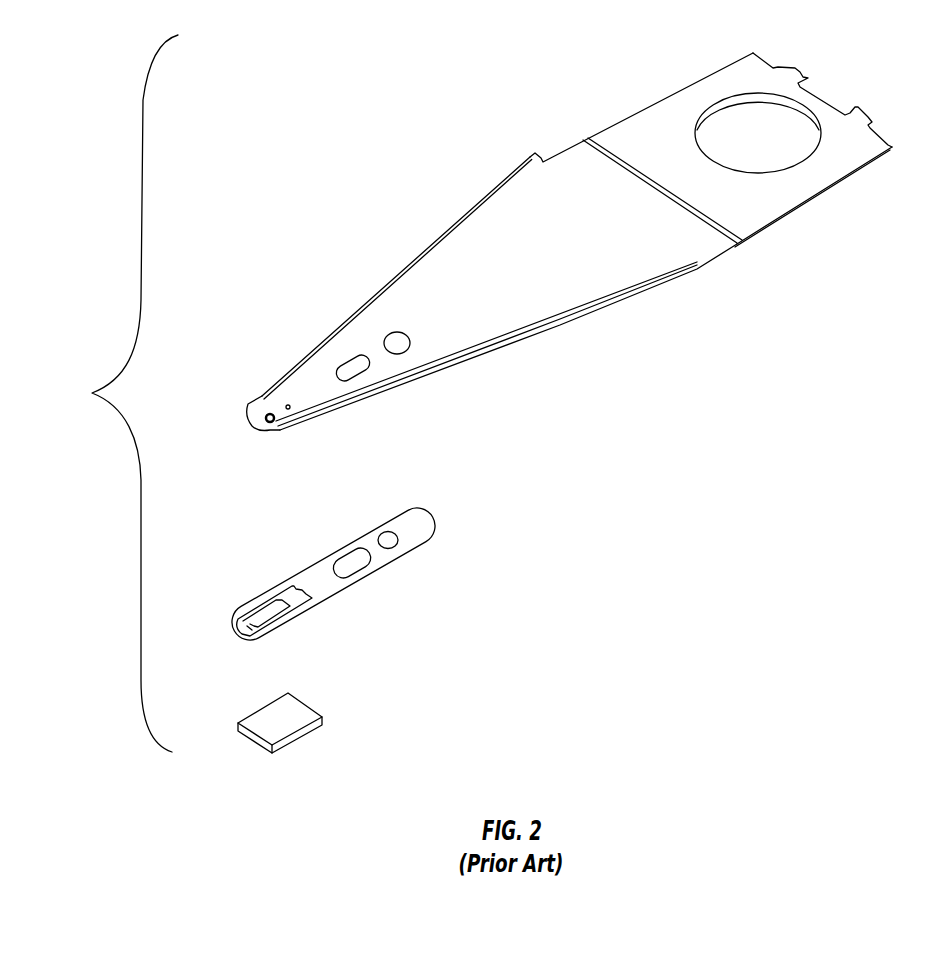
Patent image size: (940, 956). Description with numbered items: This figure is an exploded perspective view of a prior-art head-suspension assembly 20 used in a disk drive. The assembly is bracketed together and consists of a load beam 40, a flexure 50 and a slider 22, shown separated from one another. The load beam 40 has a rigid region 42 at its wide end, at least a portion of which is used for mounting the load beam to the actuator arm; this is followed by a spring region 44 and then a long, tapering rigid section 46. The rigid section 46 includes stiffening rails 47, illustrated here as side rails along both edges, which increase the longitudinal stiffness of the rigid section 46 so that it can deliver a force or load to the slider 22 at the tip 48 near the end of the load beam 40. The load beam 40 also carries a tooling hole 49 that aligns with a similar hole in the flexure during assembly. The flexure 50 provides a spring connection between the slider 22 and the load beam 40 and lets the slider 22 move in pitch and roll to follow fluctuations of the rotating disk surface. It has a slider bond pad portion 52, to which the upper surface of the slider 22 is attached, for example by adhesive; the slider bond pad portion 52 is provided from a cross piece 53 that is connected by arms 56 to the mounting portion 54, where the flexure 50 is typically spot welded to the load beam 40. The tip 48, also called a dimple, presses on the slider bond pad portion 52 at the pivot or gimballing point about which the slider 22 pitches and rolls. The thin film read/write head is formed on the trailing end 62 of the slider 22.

The head-suspension assembly 20 is at (116, 393).
The slider 22 is at (278, 740).
The load beam 40 is at (452, 189).
The rigid region 42 is at (630, 123).
The spring region 44 is at (703, 257).
The rigid section 46 is at (618, 262).
The stiffening rails 47 is at (325, 333).
The tip 48 is at (268, 410).
The tooling hole 49 is at (390, 338).
The flexure 50 is at (313, 541).
The slider bond pad portion 52 is at (272, 610).
The cross piece 53 is at (243, 625).
The mounting portion 54 is at (415, 538).
The arms 56 is at (263, 600).
The trailing end 62 is at (257, 747).